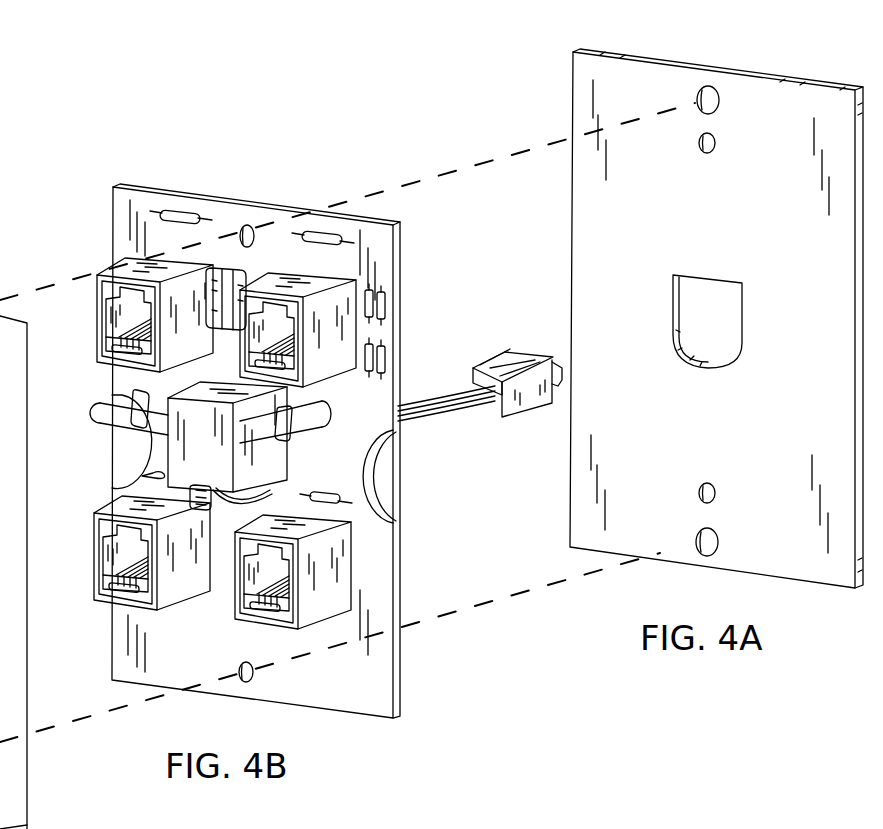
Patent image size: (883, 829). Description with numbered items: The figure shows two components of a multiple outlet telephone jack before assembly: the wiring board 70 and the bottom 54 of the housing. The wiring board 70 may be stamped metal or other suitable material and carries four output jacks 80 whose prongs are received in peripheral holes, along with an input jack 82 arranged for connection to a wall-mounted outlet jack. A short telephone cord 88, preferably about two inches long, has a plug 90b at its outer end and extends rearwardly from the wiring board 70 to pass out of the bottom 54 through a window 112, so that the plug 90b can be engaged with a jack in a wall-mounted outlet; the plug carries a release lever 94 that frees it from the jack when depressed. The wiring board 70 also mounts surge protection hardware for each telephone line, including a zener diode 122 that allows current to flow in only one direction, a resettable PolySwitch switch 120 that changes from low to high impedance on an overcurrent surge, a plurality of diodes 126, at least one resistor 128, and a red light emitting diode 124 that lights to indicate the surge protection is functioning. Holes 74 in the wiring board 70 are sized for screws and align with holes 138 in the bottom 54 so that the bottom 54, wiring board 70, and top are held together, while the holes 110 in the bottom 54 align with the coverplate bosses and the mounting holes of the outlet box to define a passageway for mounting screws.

In FIG. 4A, the bottom 54 is at (752, 64).
In FIG. 4B, the wiring board 70 is at (100, 213).
In FIG. 4B, the zener diode 122 is at (180, 212).
In FIG. 4B, the holes 74 is at (245, 226).
In FIG. 4B, the switch 120 is at (255, 275).
In FIG. 4B, the output jacks 80 is at (103, 278).
In FIG. 4B, the diodes 126 is at (384, 296).
In FIG. 4B, the light emitting diode 124 is at (100, 408).
In FIG. 4B, the input jack 82 is at (214, 446).
In FIG. 4B, the resistor 128 is at (365, 487).
In FIG. 4B, the release levers 94 is at (502, 392).
In FIG. 4B, the telephone cord 88 is at (440, 405).
In FIG. 4B, the second plug 90b is at (515, 405).
In FIG. 4A, the window 112 is at (703, 316).
In FIG. 4A, the holes 138 is at (705, 503).
In FIG. 4A, the holes 110 is at (710, 553).